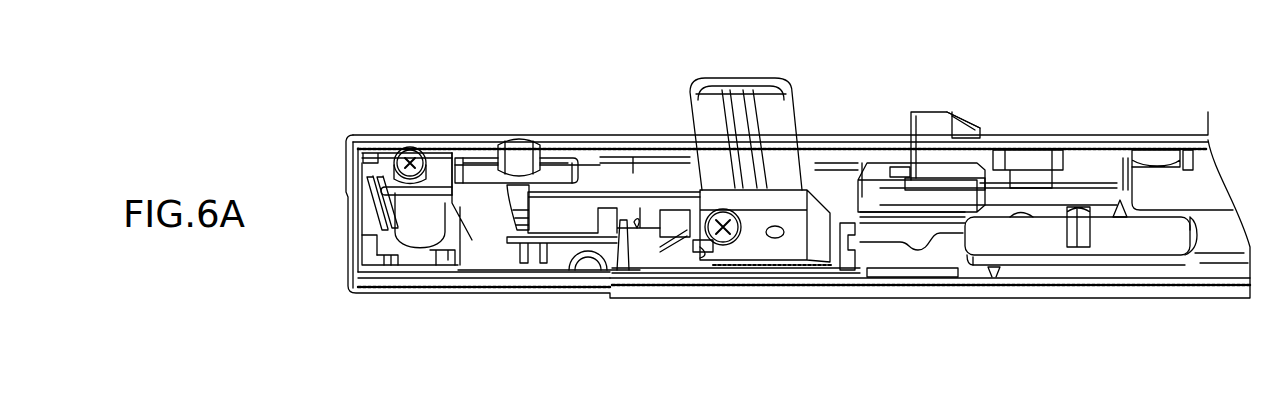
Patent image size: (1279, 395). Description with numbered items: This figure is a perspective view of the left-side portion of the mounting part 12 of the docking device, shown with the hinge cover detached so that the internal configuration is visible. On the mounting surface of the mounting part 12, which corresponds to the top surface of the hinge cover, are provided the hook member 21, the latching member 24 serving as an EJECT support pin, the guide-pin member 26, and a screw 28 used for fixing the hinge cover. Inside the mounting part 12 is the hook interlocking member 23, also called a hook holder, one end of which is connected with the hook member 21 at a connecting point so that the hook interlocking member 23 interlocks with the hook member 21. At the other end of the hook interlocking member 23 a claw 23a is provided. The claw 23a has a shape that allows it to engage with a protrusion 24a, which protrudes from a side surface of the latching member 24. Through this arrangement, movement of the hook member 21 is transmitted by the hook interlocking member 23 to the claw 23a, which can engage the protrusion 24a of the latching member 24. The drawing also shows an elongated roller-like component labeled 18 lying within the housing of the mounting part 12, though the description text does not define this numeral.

The mounting part 12 is at (1103, 130).
The screw 28 is at (411, 147).
The latching member 24 is at (520, 137).
The protrusion 24a is at (513, 213).
The hook interlocking member 23 is at (597, 248).
The claw 23a is at (540, 245).
The guide-pin member 26 is at (737, 78).
The hook member 21 is at (930, 110).
The roller 18 is at (1120, 242).